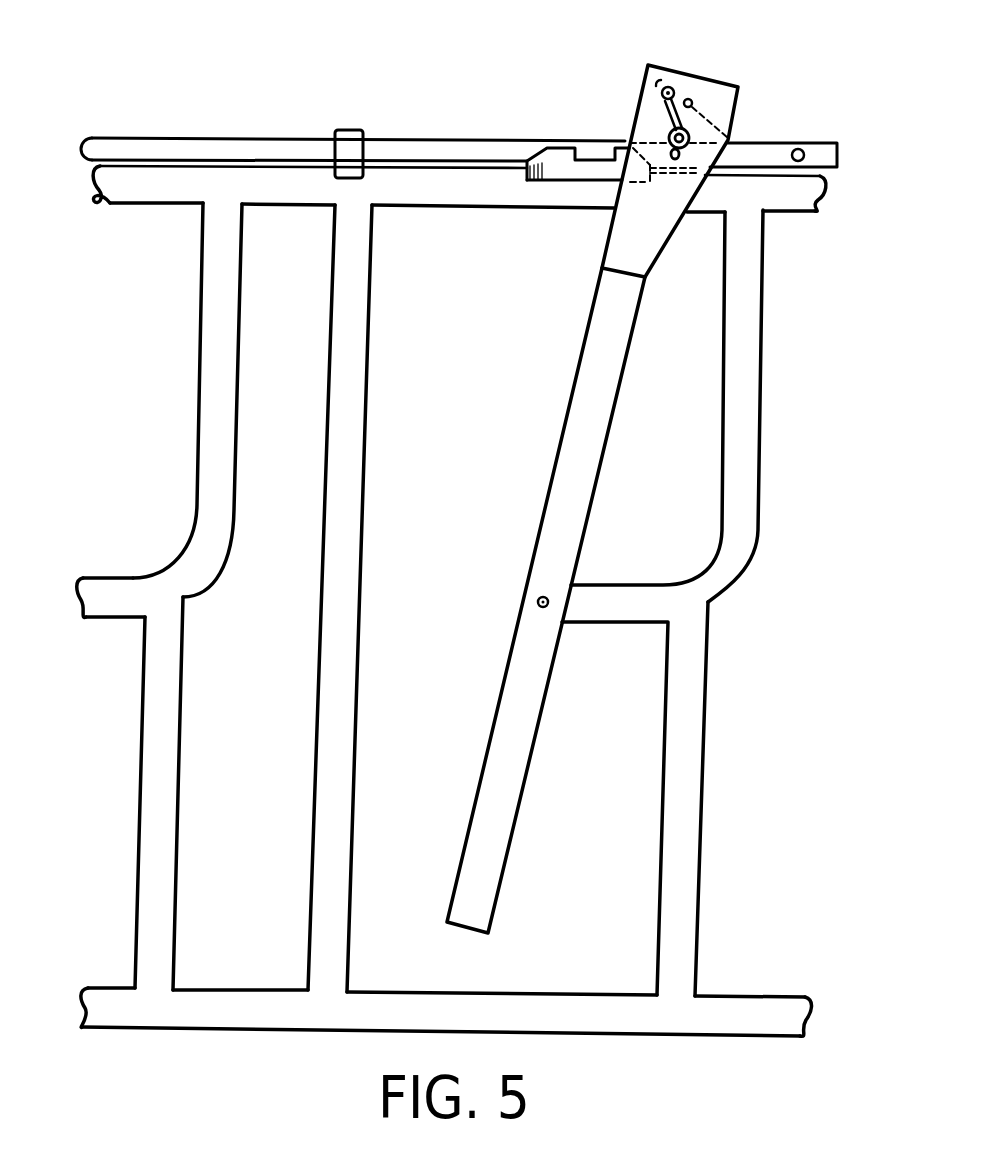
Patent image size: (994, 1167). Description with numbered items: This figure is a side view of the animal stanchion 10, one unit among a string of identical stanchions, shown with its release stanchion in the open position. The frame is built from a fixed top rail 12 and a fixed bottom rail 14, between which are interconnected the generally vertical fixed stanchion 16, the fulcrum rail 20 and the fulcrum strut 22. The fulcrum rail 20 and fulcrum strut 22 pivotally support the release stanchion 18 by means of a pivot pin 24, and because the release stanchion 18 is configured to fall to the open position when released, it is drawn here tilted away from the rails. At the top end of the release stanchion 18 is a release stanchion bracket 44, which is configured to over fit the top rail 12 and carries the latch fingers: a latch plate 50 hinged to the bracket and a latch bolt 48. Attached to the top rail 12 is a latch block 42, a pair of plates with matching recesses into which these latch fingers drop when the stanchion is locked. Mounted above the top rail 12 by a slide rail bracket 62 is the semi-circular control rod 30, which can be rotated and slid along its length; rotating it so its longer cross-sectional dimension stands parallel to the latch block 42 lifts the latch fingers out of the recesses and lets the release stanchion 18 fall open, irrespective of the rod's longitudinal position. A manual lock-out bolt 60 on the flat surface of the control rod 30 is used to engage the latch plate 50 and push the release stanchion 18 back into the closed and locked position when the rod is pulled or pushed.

The animal stanchion 10 is at (745, 620).
The fixed top rail 12 is at (443, 200).
The fixed bottom rail 14 is at (492, 995).
The fixed stanchion 16 is at (353, 567).
The release stanchion 18 is at (525, 750).
The fulcrum rail 20 is at (227, 470).
The fulcrum strut 22 is at (700, 767).
The pivot pin 24 is at (540, 597).
The control rod 30 is at (297, 142).
The latch block 42 is at (541, 147).
The release stanchion bracket 44 is at (666, 228).
The latch bolt 48 is at (668, 132).
The latch plate 50 is at (700, 110).
The manual lock-out bolt 60 is at (800, 148).
The slide rail bracket 62 is at (360, 130).